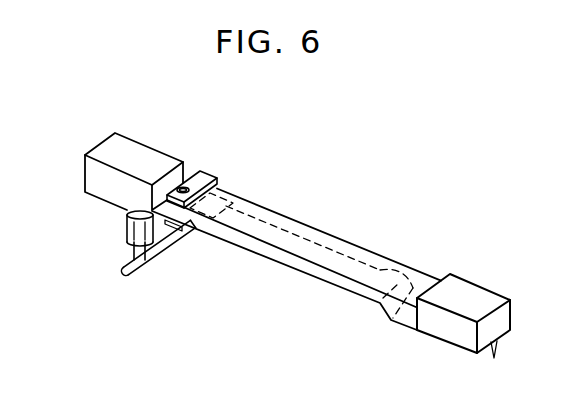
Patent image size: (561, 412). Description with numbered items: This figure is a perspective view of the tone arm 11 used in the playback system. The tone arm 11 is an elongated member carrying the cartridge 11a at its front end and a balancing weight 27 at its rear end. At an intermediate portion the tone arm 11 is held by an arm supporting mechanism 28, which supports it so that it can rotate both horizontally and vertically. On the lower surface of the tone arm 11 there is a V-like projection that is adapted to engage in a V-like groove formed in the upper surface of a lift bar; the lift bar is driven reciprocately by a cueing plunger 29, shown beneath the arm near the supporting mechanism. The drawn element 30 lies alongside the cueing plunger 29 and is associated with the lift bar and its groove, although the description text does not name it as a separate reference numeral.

The tone arm 11 is at (330, 237).
The cartridge 11a is at (467, 285).
The balancing weight 27 is at (138, 150).
The arm supporting mechanism 28 is at (212, 175).
The cueing plunger 29 is at (126, 223).
The rod 30 is at (192, 233).